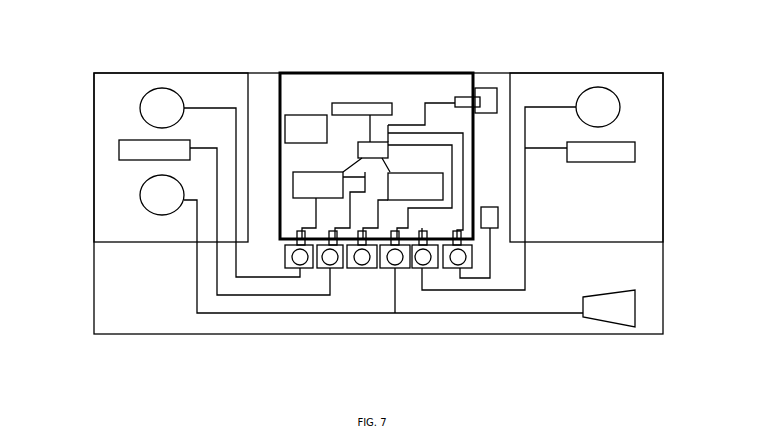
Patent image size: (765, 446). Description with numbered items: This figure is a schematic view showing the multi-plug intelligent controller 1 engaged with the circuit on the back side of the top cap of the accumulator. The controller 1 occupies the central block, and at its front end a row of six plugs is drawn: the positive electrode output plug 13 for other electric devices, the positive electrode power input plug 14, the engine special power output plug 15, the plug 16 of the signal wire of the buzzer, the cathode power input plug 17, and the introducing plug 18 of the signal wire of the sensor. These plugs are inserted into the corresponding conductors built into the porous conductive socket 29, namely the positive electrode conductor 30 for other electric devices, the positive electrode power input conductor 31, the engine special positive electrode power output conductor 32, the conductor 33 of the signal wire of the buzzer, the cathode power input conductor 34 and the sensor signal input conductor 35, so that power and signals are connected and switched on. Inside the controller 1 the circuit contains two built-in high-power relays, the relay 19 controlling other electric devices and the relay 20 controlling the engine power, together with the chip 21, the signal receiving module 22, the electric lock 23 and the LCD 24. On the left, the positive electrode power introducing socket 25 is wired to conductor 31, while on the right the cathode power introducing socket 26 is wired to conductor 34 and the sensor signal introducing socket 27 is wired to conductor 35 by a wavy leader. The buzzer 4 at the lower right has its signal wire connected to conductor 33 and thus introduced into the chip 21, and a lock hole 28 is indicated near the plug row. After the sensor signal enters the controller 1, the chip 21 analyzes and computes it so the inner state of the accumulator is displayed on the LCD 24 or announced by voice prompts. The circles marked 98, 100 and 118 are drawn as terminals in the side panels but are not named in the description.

The multi-plug intelligent controller 1 is at (355, 69).
The buzzer 4 is at (632, 308).
The positive electrode output plug for other electric devices 13 is at (298, 231).
The positive electrode power input plug 14 is at (333, 231).
The engine special power output plug 15 is at (362, 231).
The plug of the signal wire of the buzzer 16 is at (395, 231).
The cathode power input plug 17 is at (425, 231).
The introducing plug of the signal wire of the sensor 18 is at (455, 231).
The relay controlling other electric devices 19 is at (338, 168).
The relay controlling the engine power 20 is at (423, 170).
The chip 21 is at (358, 146).
The signal receiving module 22 is at (366, 103).
The electric lock 23 is at (455, 99).
The LCD 24 is at (304, 113).
The positive electrode power introducing socket 25 is at (119, 148).
The cathode power introducing socket 26 is at (637, 142).
The sensor signal introducing socket 27 is at (498, 218).
The lock hole 28 is at (292, 270).
The porous conductive socket 29 is at (494, 86).
The positive electrode conductor for other electric devices 30 is at (303, 268).
The positive electrode power input conductor 31 is at (332, 268).
The engine special positive electrode power output conductor 32 is at (364, 268).
The conductor of the signal wire of the buzzer 33 is at (397, 268).
The cathode power input conductor 34 is at (425, 268).
The sensor signal input conductor 35 is at (460, 268).
The power source 98 is at (158, 88).
The power source 100 is at (133, 198).
The power source 118 is at (597, 87).